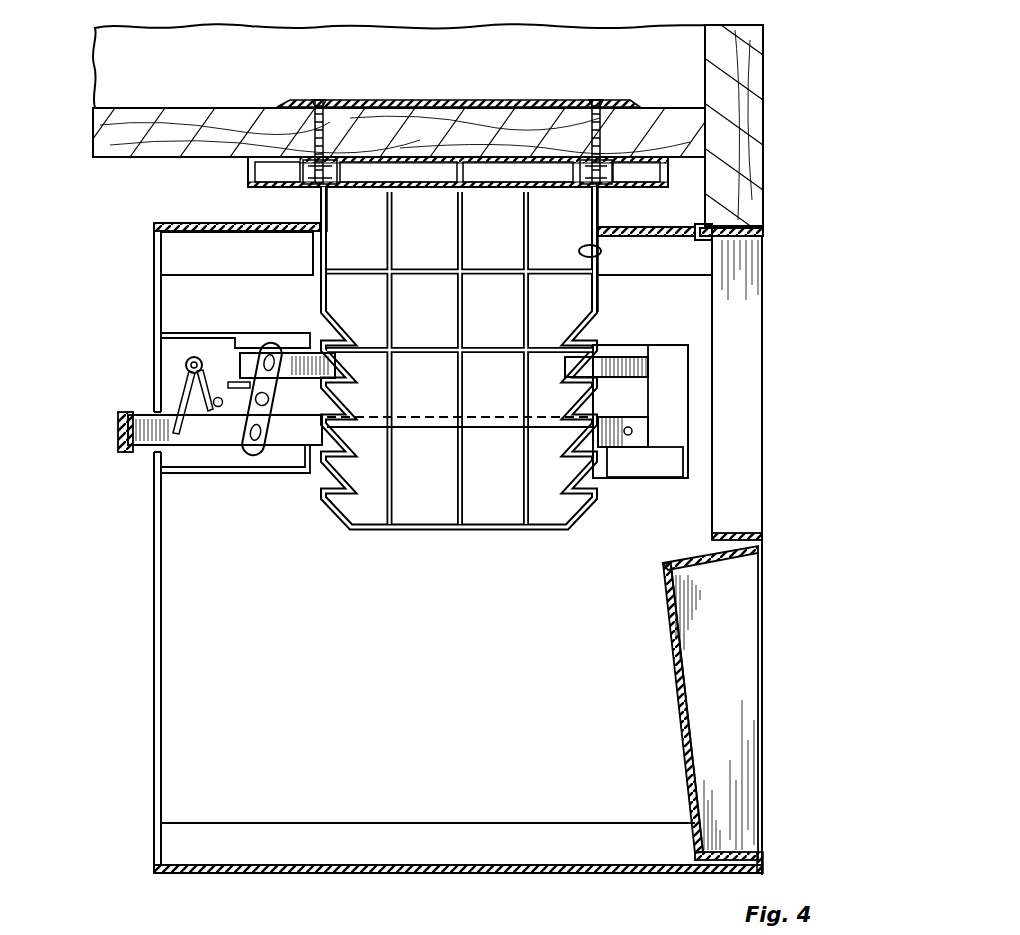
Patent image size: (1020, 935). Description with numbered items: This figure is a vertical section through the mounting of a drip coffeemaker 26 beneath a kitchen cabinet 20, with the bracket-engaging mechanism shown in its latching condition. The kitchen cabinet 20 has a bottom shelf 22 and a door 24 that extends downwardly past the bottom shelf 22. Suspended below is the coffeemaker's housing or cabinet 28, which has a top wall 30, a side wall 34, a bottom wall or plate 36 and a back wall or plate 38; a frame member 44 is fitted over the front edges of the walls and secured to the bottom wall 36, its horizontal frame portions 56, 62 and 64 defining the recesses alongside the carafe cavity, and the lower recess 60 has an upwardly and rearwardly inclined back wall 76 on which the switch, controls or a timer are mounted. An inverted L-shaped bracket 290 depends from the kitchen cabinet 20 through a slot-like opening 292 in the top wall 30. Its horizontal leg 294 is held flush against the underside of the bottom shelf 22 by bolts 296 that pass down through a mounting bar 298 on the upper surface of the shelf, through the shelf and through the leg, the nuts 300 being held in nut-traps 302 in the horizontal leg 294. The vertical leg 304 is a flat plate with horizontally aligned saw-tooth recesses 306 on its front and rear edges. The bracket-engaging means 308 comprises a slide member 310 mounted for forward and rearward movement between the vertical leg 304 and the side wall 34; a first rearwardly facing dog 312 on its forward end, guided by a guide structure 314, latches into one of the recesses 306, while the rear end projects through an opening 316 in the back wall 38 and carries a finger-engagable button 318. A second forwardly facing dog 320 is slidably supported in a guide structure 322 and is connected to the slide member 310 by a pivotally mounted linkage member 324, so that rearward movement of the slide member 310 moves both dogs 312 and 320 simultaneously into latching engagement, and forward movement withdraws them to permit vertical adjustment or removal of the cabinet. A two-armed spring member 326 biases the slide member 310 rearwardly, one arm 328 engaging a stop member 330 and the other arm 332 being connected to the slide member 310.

The kitchen cabinet 20 is at (92, 67).
The bottom shelf 22 is at (120, 158).
The door 24 is at (765, 134).
The drip coffeemaker 26 is at (128, 610).
The housing or cabinet 28 is at (152, 705).
The top wall 30 is at (183, 223).
The side wall 34 is at (440, 672).
The bottom wall or plate 36 is at (200, 872).
The back wall or plate 38 is at (152, 657).
The frame member 44 is at (763, 537).
The horizontal frame portion 56 is at (766, 230).
The lower recess 60 is at (735, 665).
The horizontal frame portion 62 is at (760, 550).
The horizontal frame portion 64 is at (764, 860).
The back wall 76 is at (700, 723).
The bracket 290 is at (600, 201).
The slot-like opening 292 is at (602, 253).
The horizontal leg 294 is at (250, 173).
The bolt 296 is at (323, 101).
The mounting bar 298 is at (453, 100).
The nut 300 is at (625, 106).
The nut-trap 302 is at (334, 189).
The vertical leg 304 is at (318, 211).
The saw-tooth recess 306 is at (598, 330).
The bracket-engaging means 308 is at (249, 483).
The slide member 310 is at (188, 434).
The first bracket-recess-engaging dog 312 is at (607, 373).
The guide structure 314 is at (690, 368).
The opening 316 is at (136, 410).
The finger-engagable button 318 is at (122, 434).
The second bracket-recess-engaging dog 320 is at (303, 360).
The guide structure 322 is at (265, 333).
The linkage member 324 is at (268, 457).
The two-armed spring member 326 is at (205, 380).
The arm 328 is at (190, 357).
The stop member 330 is at (238, 470).
The arm 332 is at (176, 413).